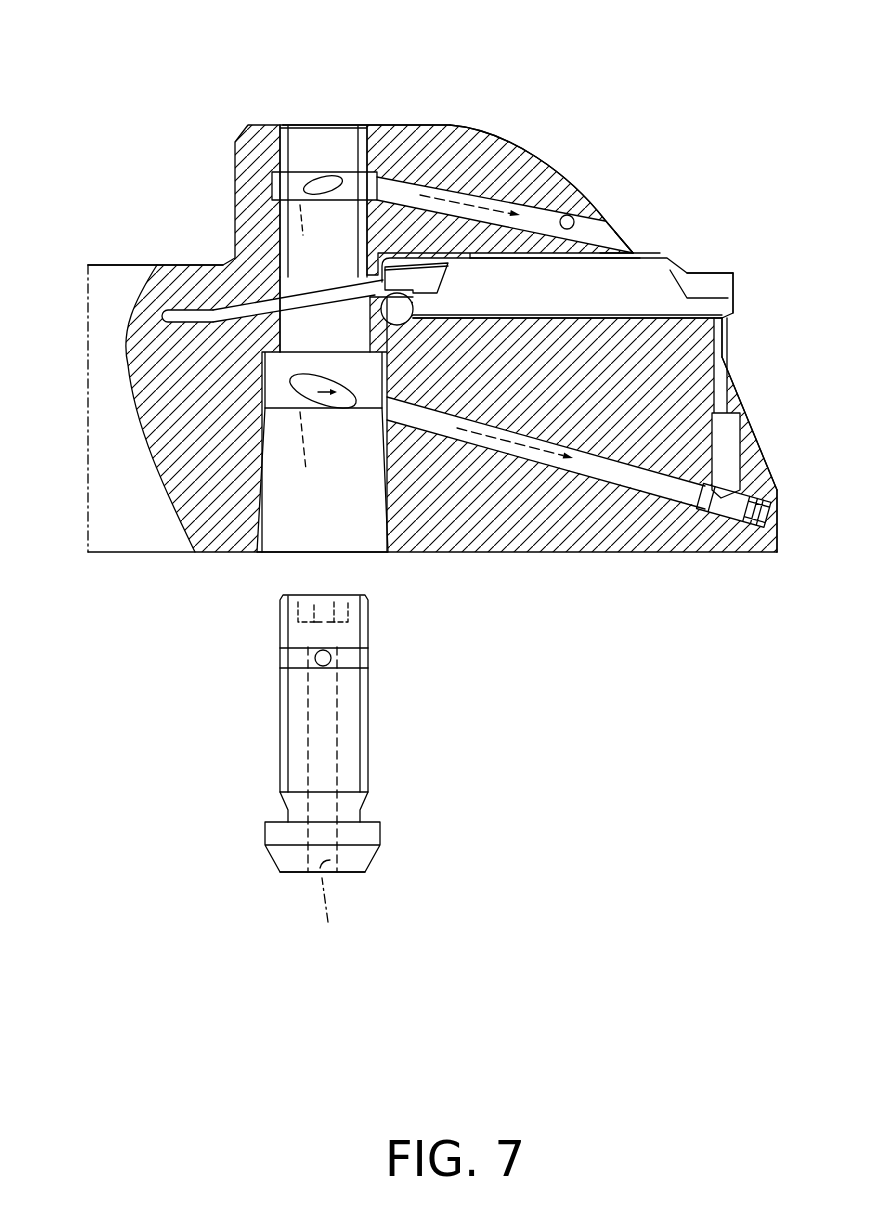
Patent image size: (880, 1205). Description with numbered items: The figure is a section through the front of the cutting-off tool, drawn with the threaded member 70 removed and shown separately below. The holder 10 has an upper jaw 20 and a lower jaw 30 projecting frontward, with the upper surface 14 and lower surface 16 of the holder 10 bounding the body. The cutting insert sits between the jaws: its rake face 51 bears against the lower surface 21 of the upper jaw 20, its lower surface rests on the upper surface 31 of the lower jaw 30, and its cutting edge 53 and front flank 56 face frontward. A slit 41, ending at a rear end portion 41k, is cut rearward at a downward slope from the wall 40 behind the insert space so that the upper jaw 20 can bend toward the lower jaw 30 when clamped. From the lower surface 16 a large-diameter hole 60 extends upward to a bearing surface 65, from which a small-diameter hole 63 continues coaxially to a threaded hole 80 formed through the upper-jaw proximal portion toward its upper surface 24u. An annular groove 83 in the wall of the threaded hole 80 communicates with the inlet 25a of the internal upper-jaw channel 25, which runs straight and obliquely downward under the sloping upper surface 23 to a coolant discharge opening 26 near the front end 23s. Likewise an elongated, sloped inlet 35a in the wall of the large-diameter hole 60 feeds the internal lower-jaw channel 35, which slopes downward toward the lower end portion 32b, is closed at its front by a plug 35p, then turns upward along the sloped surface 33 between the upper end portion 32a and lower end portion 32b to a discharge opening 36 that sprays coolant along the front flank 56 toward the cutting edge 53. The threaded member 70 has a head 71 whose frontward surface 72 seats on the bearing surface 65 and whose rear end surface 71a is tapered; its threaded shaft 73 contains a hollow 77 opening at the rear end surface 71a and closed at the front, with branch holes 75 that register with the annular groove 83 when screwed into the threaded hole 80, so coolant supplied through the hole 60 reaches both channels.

The holder 10 is at (88, 262).
The upper surface of holder 14 is at (133, 265).
The lower surface of holder 16 is at (467, 552).
The upper jaw 20 is at (505, 138).
The lower surface of upper jaw 21 is at (533, 260).
The upper surface of upper jaw 23 is at (547, 172).
The front end of upper jaw 23s is at (637, 252).
The upper surface of upper-jaw proximal portion 24u is at (393, 125).
The internal upper-jaw channel 25 is at (567, 215).
The inlet of internal upper-jaw channel 25a is at (323, 185).
The coolant discharge opening 26 is at (622, 245).
The lower jaw 30 is at (684, 532).
The upper surface of lower jaw 31 is at (593, 317).
The upper end portion 32a is at (723, 335).
The lower end portion 32b is at (778, 547).
The sloped surface 33 is at (762, 449).
The internal lower-jaw channel 35 is at (642, 478).
The inlet of internal lower-jaw channel 35a is at (333, 404).
The plug 35p is at (778, 508).
The coolant discharge opening 36 is at (730, 390).
The wall 40 is at (414, 302).
The slit 41 is at (213, 310).
The rear end portion of slit 41k is at (165, 314).
The rake face 51 is at (707, 272).
The cutting edge 53 is at (735, 263).
The front flank 56 is at (736, 290).
The large-diameter hole 60 is at (275, 527).
The small-diameter hole 63 is at (281, 329).
The bearing surface 65 is at (272, 362).
The threaded member 70 is at (420, 728).
The head 71 is at (381, 839).
The rear end surface of head 71a is at (290, 873).
The frontward surface of head 72 is at (278, 821).
The threaded shaft 73 is at (283, 768).
The branch holes 75 is at (368, 660).
The hollow 77 is at (324, 915).
The threaded hole 80 is at (283, 150).
The annular groove 83 is at (273, 182).